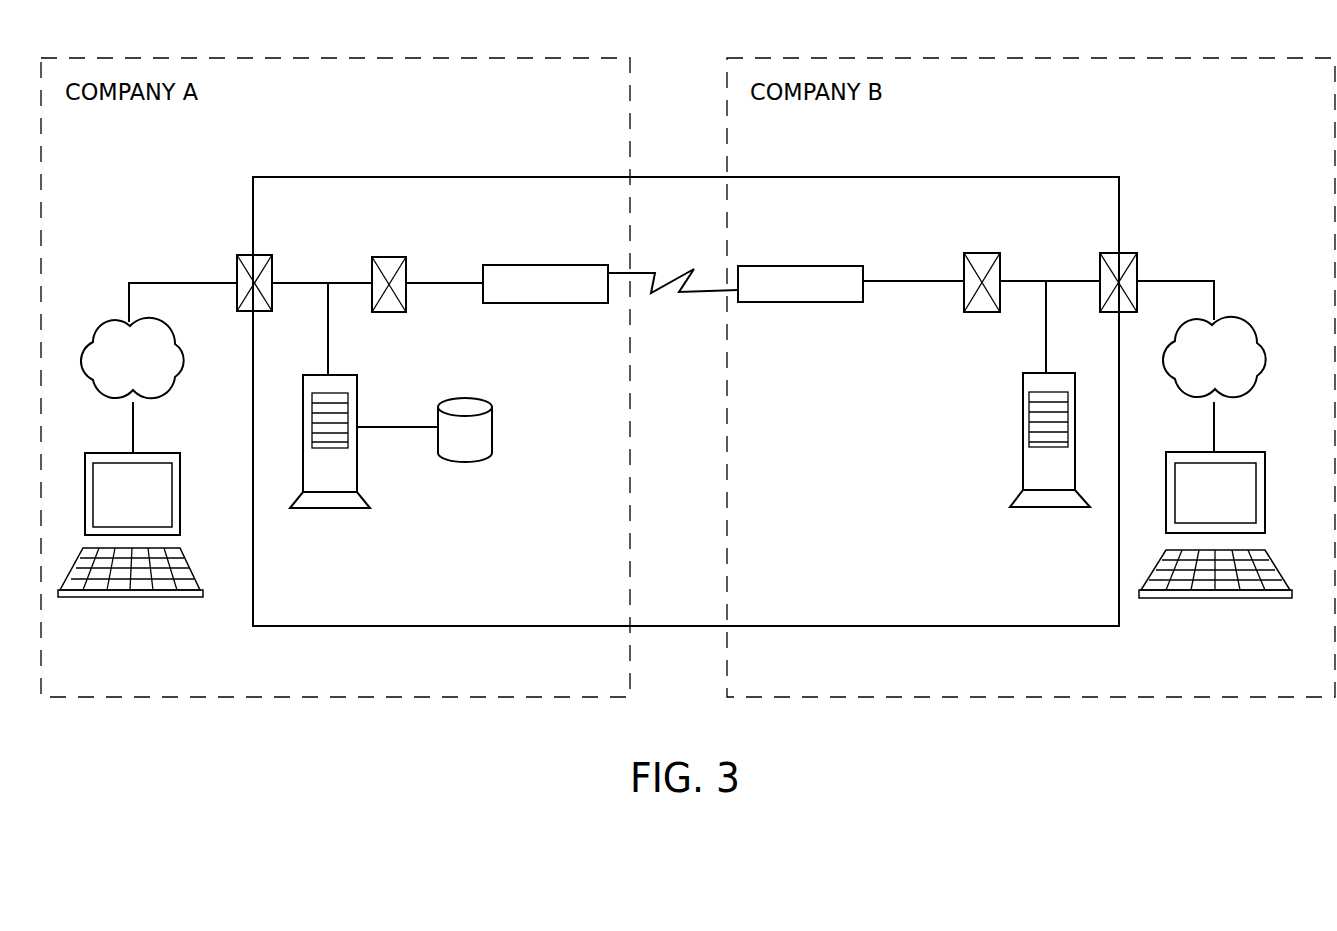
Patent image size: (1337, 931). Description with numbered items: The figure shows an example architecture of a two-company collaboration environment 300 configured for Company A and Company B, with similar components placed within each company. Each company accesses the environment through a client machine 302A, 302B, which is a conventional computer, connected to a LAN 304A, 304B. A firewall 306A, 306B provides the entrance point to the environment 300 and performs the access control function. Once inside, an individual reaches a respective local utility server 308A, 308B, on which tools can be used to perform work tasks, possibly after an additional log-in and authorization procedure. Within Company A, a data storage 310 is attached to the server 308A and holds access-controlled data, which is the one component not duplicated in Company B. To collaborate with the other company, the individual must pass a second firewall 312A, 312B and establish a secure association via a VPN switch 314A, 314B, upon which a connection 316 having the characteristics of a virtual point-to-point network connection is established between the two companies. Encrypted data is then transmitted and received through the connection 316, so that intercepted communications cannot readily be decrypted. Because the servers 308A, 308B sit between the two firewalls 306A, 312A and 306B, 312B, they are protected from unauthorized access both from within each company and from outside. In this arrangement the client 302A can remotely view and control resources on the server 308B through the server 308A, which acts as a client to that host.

The collaboration environment 300 is at (1102, 611).
The client machine 302A is at (165, 453).
The client machine 302B is at (1247, 452).
The LAN 304A is at (100, 327).
The LAN 304B is at (1243, 321).
The firewall 306A is at (263, 255).
The firewall 306B is at (1128, 253).
The utility server 308A is at (342, 374).
The utility server 308B is at (1028, 372).
The data storage 310 is at (465, 397).
The firewall 312A is at (392, 257).
The firewall 312B is at (981, 253).
The VPN switch 314A is at (536, 265).
The VPN switch 314B is at (788, 266).
The connection 316 is at (673, 271).